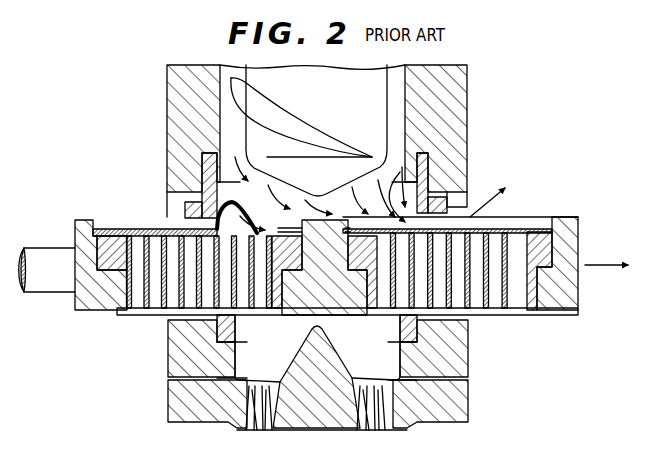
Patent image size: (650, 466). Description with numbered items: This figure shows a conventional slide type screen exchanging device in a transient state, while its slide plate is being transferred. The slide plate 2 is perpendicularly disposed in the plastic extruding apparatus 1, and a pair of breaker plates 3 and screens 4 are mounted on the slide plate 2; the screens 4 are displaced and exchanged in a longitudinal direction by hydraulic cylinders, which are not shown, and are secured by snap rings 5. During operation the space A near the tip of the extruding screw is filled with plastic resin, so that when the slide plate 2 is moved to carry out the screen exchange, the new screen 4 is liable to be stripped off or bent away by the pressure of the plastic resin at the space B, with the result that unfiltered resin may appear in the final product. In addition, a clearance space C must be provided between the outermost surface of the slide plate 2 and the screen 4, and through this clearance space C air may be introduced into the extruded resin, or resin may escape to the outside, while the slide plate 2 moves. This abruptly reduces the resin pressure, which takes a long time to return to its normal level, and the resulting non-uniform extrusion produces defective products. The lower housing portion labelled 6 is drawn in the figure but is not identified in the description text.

The plastic extruding apparatus 1 is at (455, 130).
The slide plate 2 is at (565, 235).
The breaker plate 3 is at (533, 297).
The screen 4 is at (121, 229).
The snap ring 5 is at (98, 227).
The lower housing 6 is at (353, 418).
The space near the tip of the extruding screw A is at (340, 198).
The space B is at (257, 198).
The clearance space C is at (151, 229).